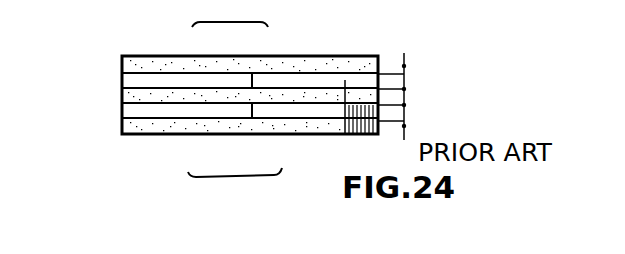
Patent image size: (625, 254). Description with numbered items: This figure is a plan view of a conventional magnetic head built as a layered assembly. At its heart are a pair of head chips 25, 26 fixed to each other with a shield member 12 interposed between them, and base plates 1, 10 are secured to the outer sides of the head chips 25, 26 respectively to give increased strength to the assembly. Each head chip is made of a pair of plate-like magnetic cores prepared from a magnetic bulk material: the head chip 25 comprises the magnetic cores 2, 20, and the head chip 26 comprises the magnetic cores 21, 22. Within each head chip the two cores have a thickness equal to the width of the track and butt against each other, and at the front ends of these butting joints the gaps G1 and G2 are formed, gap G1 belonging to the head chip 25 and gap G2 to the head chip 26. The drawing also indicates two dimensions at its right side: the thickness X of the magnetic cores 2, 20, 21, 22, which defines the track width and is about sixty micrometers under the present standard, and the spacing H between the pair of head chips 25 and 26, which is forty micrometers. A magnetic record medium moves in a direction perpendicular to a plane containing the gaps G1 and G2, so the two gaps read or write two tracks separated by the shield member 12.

The base plate 1 is at (122, 55).
The magnetic core 2 is at (206, 82).
The base plate 10 is at (122, 134).
The shield member 12 is at (122, 96).
The magnetic core 20 is at (262, 81).
The magnetic core 21 is at (212, 112).
The magnetic core 22 is at (285, 113).
The head chip 25 is at (230, 13).
The head chip 26 is at (235, 185).
The gap G1 is at (260, 82).
The gap G2 is at (268, 106).
The thickness of the magnetic cores X is at (407, 80).
The spacing between the head chips H is at (407, 98).